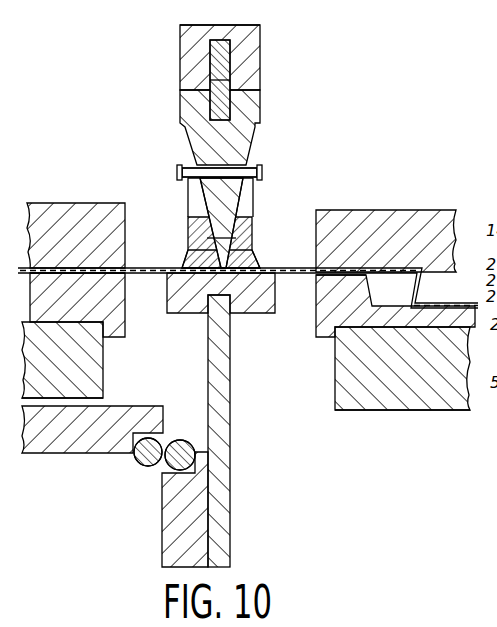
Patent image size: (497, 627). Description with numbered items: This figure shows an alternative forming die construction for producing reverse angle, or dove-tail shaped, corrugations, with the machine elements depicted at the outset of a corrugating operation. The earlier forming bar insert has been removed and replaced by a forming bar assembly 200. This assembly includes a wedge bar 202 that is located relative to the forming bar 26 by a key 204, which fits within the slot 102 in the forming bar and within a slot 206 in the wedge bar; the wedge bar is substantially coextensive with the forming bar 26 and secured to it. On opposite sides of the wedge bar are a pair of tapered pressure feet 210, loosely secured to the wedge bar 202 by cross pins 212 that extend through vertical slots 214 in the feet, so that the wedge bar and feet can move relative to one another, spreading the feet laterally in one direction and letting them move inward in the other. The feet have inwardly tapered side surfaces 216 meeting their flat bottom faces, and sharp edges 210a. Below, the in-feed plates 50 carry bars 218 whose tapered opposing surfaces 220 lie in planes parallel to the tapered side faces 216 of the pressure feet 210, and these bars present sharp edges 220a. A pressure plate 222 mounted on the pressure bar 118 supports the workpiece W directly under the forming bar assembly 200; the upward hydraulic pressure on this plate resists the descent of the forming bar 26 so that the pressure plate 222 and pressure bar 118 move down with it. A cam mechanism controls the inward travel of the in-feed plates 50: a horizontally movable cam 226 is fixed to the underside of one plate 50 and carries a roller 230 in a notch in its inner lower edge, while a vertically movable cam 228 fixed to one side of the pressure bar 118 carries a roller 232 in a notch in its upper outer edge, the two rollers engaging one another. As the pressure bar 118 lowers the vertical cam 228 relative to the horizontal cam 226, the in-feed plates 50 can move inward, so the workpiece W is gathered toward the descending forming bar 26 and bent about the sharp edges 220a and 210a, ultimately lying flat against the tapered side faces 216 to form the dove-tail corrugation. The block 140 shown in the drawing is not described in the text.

The forming bar assembly 200 is at (219, 145).
The slot 102 is at (218, 25).
The forming bar 26 is at (256, 46).
The wedge bar 202 is at (182, 98).
The key 204 is at (213, 57).
The slot 206 is at (213, 80).
The cross pin 212 is at (262, 176).
The vertical slot 214 is at (196, 210).
The tapered side surface 216 is at (240, 238).
The tapered pressure foot 210 is at (220, 242).
The sharp edge 210a is at (268, 252).
The workpiece W is at (50, 204).
The hold-down die block 140 is at (82, 212).
The tapered opposing surface 220 is at (252, 323).
The sharp edge 220a is at (125, 274).
The in-feed bar 218 is at (105, 372).
The in-feed plate 50 is at (92, 384).
The pressure plate 222 is at (172, 313).
The pressure bar 118 is at (231, 410).
The horizontally movable cam 226 is at (76, 453).
The roller 230 is at (146, 466).
The roller 232 is at (183, 441).
The vertically movable cam 228 is at (161, 533).